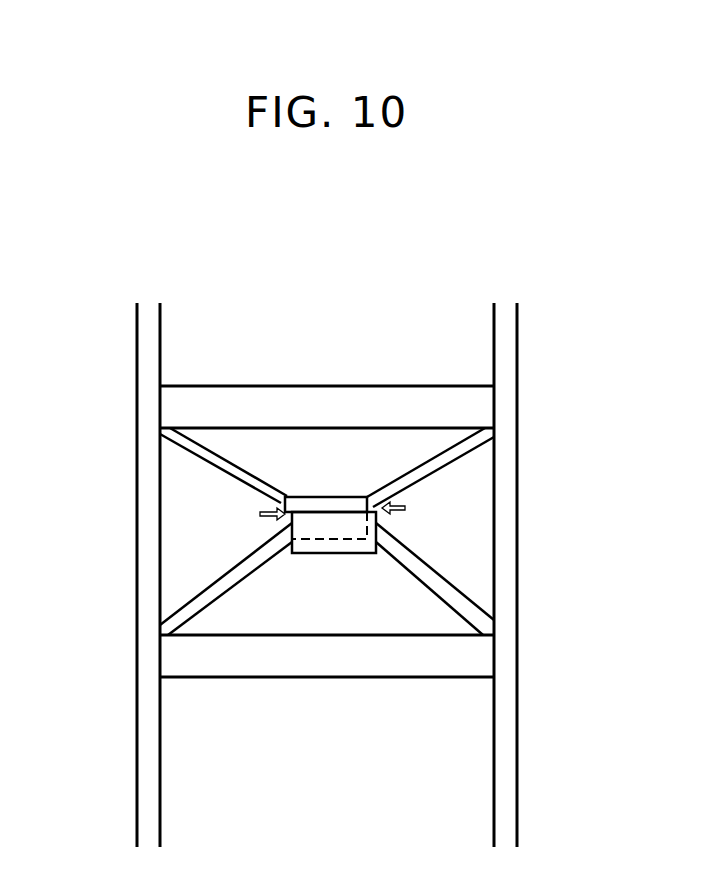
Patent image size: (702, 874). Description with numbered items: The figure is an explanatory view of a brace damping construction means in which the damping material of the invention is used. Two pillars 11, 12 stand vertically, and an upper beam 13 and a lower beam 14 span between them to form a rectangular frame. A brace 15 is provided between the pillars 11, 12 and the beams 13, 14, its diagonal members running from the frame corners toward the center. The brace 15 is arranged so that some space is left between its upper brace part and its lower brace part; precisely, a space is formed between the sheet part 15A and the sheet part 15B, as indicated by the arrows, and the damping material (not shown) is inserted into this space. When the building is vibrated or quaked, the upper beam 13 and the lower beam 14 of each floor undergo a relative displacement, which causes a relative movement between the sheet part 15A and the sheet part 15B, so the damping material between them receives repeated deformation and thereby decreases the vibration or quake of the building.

The pillar 11 is at (148, 722).
The pillar 12 is at (508, 532).
The upper beam 13 is at (319, 395).
The lower beam 14 is at (305, 670).
The brace 15 is at (233, 577).
The sheet part 15A is at (318, 497).
The sheet part 15B is at (335, 553).